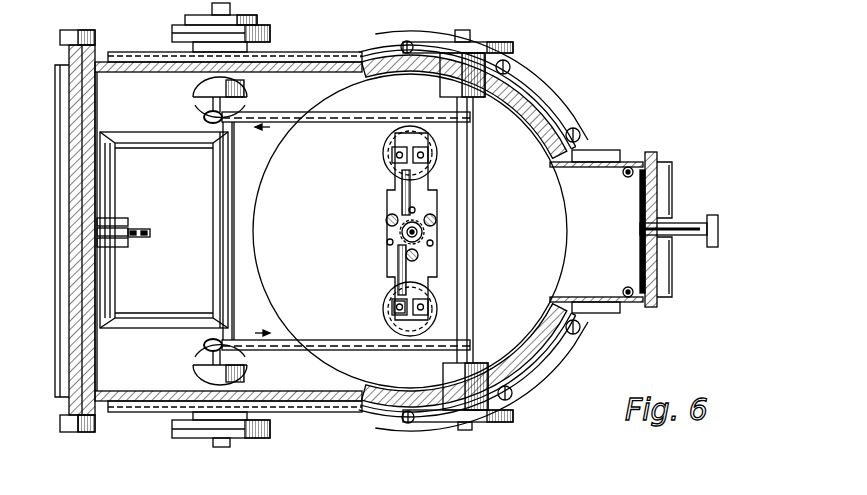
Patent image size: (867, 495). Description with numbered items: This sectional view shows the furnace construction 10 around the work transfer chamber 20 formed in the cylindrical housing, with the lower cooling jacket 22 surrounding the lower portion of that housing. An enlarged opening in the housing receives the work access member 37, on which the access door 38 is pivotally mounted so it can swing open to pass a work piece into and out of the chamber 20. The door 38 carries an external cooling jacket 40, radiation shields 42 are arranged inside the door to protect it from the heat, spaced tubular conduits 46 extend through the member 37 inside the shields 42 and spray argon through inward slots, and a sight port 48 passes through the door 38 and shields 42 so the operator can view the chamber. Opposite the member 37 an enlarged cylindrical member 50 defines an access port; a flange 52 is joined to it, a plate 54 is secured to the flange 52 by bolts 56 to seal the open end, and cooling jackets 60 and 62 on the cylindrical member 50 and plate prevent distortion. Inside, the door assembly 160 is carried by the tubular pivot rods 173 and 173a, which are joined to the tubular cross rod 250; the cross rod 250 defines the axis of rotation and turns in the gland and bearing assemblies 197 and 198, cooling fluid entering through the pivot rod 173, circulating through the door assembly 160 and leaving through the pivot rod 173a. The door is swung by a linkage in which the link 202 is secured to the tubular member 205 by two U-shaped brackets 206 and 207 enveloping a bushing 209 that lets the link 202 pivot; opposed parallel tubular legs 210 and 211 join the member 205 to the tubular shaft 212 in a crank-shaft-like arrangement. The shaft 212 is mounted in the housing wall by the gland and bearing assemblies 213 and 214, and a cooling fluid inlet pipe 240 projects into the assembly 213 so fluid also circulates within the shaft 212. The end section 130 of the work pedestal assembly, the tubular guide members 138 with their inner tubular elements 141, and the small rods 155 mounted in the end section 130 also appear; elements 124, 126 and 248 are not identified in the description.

The furnace construction 10 is at (158, 456).
The work transfer chamber 20 is at (593, 148).
The lower cooling jacket 22 is at (535, 352).
The work access member 37 is at (628, 303).
The access door 38 is at (657, 158).
The external cooling jacket 40 is at (667, 183).
The radiation shields 42 is at (640, 215).
The tubular conduits 46 is at (635, 162).
The sight port 48 is at (707, 243).
The enlarged cylindrical member 50 is at (160, 58).
The flange 52 is at (93, 433).
The plate 54 is at (78, 433).
The bolts 56 is at (63, 428).
The cooling jacket 60 is at (137, 414).
The cooling jacket 62 is at (63, 293).
The center hub 124 is at (405, 230).
The pivot pin 126 is at (408, 236).
The end section 130 is at (398, 188).
The guide members 138 is at (400, 145).
The inner tubular elements 141 is at (393, 157).
The small rods 155 is at (410, 208).
The door assembly 160 is at (388, 218).
The tubular pivot rod 173 is at (285, 112).
The tubular pivot rod 173a is at (285, 351).
The gland and bearing assembly 197 is at (490, 42).
The gland and bearing assembly 198 is at (513, 422).
The link 202 is at (150, 233).
The tubular member 205 is at (113, 273).
The U-shaped bracket 206 is at (128, 245).
The U-shaped bracket 207 is at (128, 229).
The bushing 209 is at (117, 218).
The leg 210 is at (165, 328).
The leg 211 is at (152, 141).
The tubular shaft 212 is at (220, 203).
The gland and bearing assembly 213 is at (270, 30).
The gland and bearing assembly 214 is at (270, 440).
The cooling fluid inlet pipe 240 is at (212, 8).
The terminal 248 is at (394, 306).
The cross rod 250 is at (467, 212).